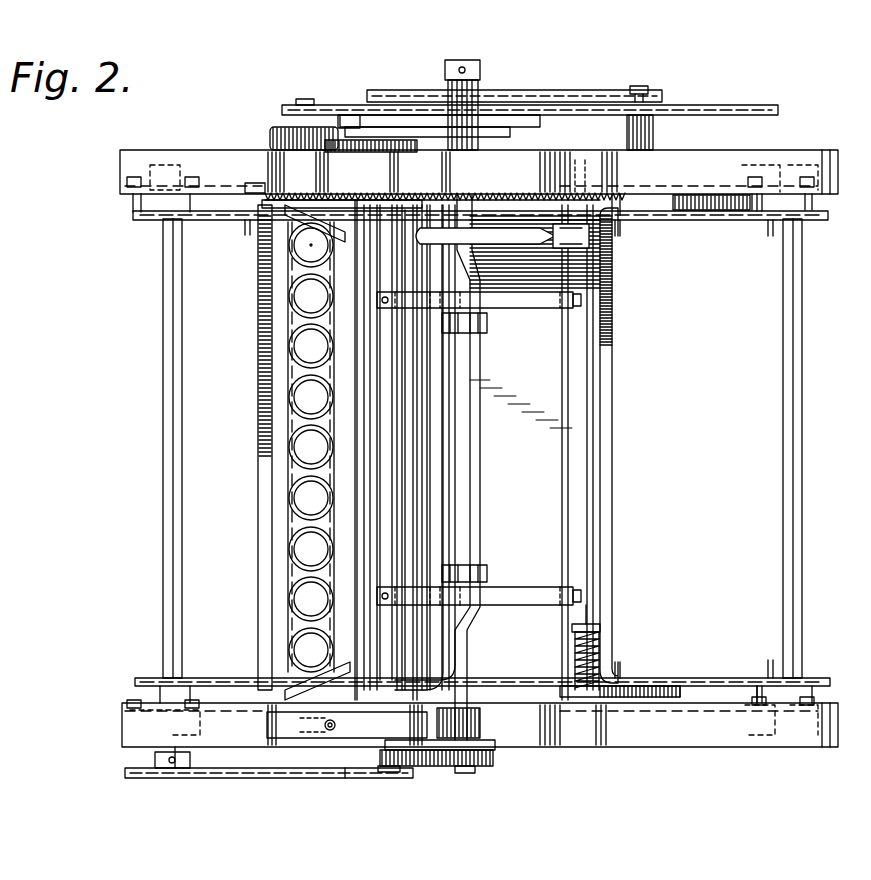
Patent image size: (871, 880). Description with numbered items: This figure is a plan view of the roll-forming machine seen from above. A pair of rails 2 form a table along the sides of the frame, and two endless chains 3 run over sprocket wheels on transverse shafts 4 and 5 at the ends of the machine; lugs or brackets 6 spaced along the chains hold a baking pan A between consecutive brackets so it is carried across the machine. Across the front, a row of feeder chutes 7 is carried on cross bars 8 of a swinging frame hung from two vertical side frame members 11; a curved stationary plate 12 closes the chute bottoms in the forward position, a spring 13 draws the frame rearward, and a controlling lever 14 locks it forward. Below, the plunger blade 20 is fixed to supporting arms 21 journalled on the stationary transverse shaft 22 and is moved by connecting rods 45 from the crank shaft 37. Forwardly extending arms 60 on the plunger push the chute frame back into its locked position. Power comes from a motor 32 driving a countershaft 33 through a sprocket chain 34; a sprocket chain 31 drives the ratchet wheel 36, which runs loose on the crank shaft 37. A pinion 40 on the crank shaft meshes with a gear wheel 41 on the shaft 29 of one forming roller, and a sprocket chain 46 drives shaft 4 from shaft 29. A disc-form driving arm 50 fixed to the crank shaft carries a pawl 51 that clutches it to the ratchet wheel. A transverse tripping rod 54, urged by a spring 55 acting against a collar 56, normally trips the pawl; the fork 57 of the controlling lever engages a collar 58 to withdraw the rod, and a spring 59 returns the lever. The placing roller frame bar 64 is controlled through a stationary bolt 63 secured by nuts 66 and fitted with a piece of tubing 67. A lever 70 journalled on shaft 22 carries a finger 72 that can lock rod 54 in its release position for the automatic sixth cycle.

The rails 2 is at (688, 220).
The endless chains 3 is at (757, 220).
The shaft 4 is at (163, 310).
The shaft 5 is at (802, 310).
The lugs or brackets 6 is at (619, 236).
The feeder chutes 7 is at (302, 300).
The cross bars 8 is at (258, 532).
The side frame members 11 is at (479, 448).
The curved stationary plate 12 is at (292, 378).
The spring 13 is at (312, 194).
The controlling lever 14 is at (230, 221).
The blade 20 is at (387, 522).
The supporting arms 21 is at (525, 308).
The stationary transverse shaft 22 is at (568, 488).
The shaft 29 is at (388, 772).
The sprocket chain 31 is at (553, 90).
The motor 32 is at (272, 130).
The countershaft 33 is at (638, 86).
The sprocket chain 34 is at (322, 104).
The ratchet wheel 36 is at (480, 82).
The crank shaft 37 is at (480, 440).
The pinion 40 is at (493, 758).
The gear wheel 41 is at (463, 773).
The connecting rods 45 is at (487, 333).
The sprocket chain 46 is at (297, 778).
The driving arm 50 is at (510, 132).
The pawl 51 is at (653, 126).
The rod 54 is at (593, 444).
The spring 55 is at (575, 652).
The collar 56 is at (592, 625).
The fork 57 is at (585, 170).
The collar 58 is at (616, 196).
The spring 59 is at (250, 188).
The arms 60 is at (338, 236).
The bolt 63 is at (322, 728).
The bar or plate 64 is at (448, 692).
The nuts 66 is at (385, 746).
The tubing 67 is at (345, 778).
The lever 70 is at (500, 240).
The finger 72 is at (673, 202).
The baking pan A is at (605, 365).